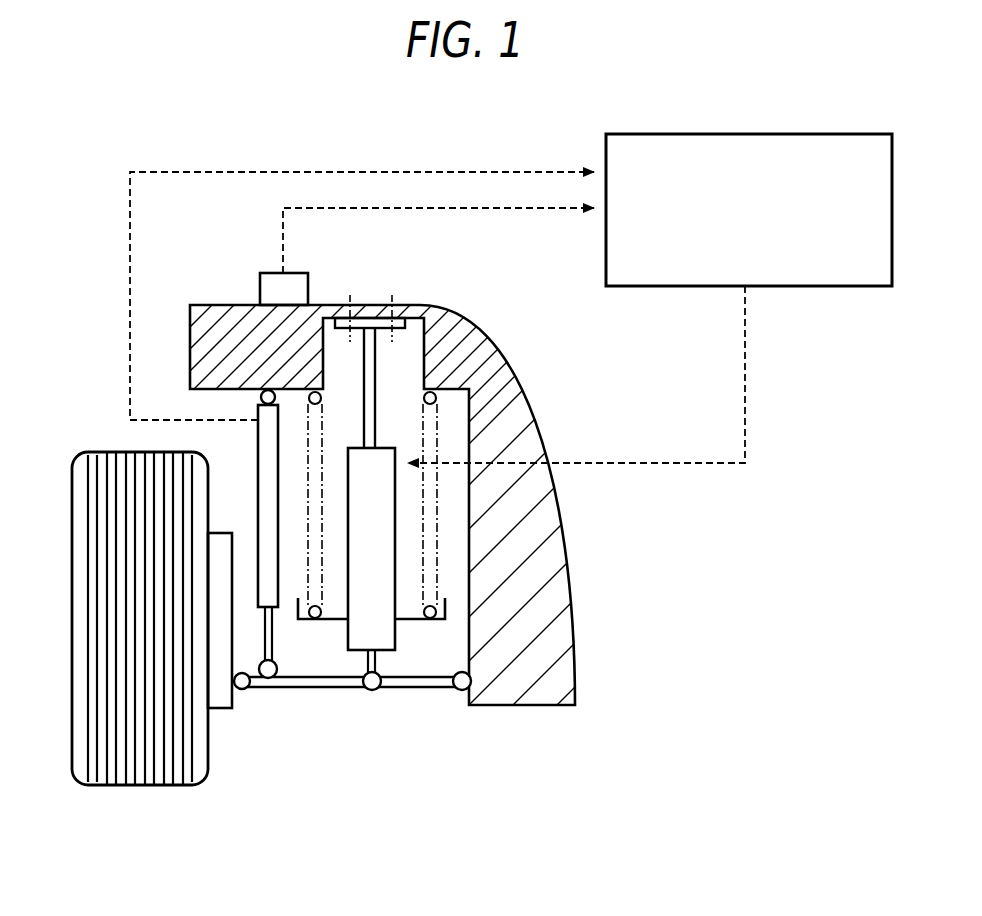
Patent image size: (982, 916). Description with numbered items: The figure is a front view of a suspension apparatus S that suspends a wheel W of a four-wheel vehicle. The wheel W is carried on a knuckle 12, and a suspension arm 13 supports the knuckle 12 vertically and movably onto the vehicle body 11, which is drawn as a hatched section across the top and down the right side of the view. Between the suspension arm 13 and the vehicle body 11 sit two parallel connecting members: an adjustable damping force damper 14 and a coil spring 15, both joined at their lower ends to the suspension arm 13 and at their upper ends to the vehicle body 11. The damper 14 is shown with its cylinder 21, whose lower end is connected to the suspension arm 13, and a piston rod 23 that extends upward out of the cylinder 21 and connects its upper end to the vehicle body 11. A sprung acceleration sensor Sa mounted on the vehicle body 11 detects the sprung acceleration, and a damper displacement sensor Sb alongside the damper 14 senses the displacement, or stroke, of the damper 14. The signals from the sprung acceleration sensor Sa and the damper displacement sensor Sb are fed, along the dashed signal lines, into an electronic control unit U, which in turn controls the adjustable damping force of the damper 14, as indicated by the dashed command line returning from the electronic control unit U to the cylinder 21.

The vehicle body 11 is at (200, 313).
The knuckle 12 is at (218, 545).
The suspension arm 13 is at (324, 688).
The adjustable damping force damper 14 is at (338, 635).
The coil spring 15 is at (320, 402).
The cylinder 21 is at (397, 628).
The piston rod 23 is at (374, 436).
The suspension apparatus S is at (351, 700).
The sprung acceleration sensor Sa is at (263, 283).
The damper displacement sensor Sb is at (258, 468).
The electronic control unit U is at (749, 210).
The wheel W is at (78, 460).